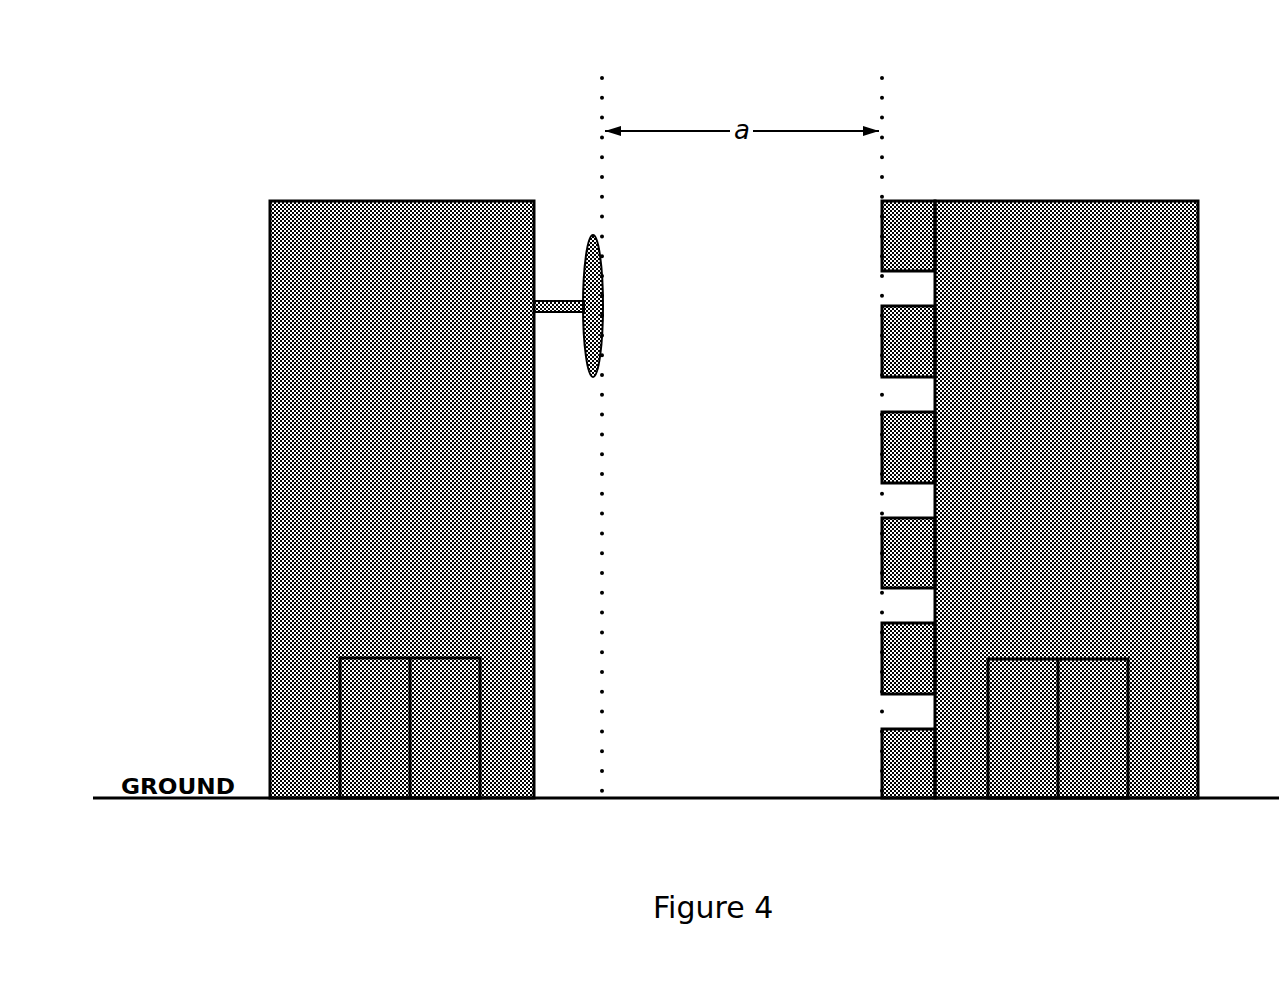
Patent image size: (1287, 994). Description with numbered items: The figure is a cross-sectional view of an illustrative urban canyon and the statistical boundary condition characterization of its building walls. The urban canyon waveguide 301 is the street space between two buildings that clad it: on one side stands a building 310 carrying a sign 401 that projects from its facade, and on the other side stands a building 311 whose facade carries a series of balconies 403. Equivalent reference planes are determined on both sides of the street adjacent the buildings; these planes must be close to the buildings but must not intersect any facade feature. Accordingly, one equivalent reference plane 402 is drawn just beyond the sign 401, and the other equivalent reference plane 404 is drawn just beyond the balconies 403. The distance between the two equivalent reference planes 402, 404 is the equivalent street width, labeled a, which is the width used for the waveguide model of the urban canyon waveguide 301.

The urban canyon waveguide 301 is at (730, 576).
The building 310 is at (262, 428).
The building with balconies 311 is at (1191, 339).
The sign 401 is at (597, 291).
The equivalent reference plane 402 is at (586, 88).
The balconies 403 is at (872, 353).
The equivalent reference plane 404 is at (882, 88).